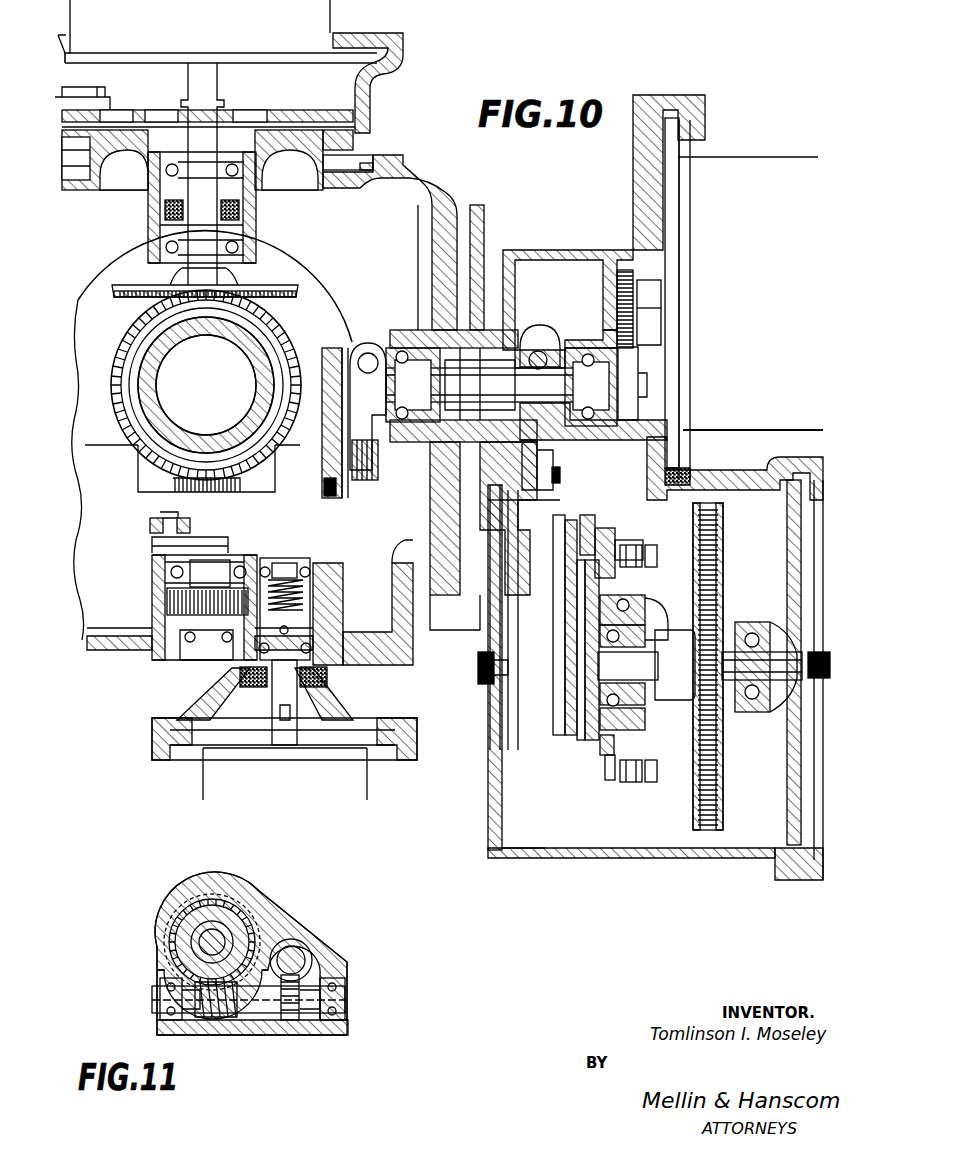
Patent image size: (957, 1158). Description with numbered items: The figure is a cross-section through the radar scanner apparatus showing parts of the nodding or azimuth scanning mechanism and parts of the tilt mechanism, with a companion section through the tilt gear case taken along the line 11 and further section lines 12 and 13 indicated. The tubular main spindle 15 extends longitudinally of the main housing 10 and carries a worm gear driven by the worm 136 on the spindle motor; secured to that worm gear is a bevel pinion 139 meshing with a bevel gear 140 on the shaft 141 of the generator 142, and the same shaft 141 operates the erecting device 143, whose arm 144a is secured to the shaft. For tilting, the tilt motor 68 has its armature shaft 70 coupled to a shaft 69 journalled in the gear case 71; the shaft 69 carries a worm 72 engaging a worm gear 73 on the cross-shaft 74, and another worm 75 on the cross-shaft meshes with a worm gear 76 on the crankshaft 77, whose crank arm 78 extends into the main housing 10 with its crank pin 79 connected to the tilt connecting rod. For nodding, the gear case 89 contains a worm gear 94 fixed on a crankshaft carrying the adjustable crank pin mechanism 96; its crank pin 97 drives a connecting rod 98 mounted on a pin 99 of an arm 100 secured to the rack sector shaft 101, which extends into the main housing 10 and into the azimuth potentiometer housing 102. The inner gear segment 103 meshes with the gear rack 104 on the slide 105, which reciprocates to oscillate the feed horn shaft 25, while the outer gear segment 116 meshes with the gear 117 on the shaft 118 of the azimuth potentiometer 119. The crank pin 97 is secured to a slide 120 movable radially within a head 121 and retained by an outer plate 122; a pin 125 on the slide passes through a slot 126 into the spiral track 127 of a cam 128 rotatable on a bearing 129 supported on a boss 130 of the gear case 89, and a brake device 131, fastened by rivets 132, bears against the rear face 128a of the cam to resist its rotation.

In FIG. 10, the main housing 10 is at (408, 187).
In FIG. 10, the section line 11— 11 is at (133, 604).
In FIG. 10, the section line 12— 12 is at (705, 426).
In FIG. 10, the section line 13— 13 is at (545, 201).
In FIG. 10, the tubular main spindle 15 is at (152, 388).
In FIG. 10, the oscillating feed horn shaft 25 is at (630, 670).
In FIG. 10, the tilt motor 68 is at (206, 776).
In FIG. 10, the shaft 69 is at (292, 702).
In FIG. 11, the shaft 69 is at (292, 954).
In FIG. 10, the tilt motor armature shaft 70 is at (297, 727).
In FIG. 10, the gear case 71 is at (343, 583).
In FIG. 11, the gear case 71 is at (182, 905).
In FIG. 10, the worm 72 is at (300, 573).
In FIG. 11, the worm 72 is at (306, 958).
In FIG. 11, the worm gear 73 is at (290, 1021).
In FIG. 11, the cross-shaft 74 is at (262, 1013).
In FIG. 11, the worm 75 is at (215, 1017).
In FIG. 10, the worm gear 76 is at (167, 598).
In FIG. 11, the worm gear 76 is at (238, 918).
In FIG. 10, the crankshaft 77 is at (215, 567).
In FIG. 11, the crankshaft 77 is at (216, 935).
In FIG. 10, the crank arm 78 is at (195, 537).
In FIG. 10, the crank pin 79 is at (180, 514).
In FIG. 10, the gear case 89 is at (732, 480).
In FIG. 10, the worm gear 94 is at (723, 797).
In FIG. 10, the adjustable crank pin mechanism 96 is at (565, 756).
In FIG. 10, the crank pin 97 is at (535, 722).
In FIG. 10, the connecting rod 98 is at (541, 604).
In FIG. 10, the pin 99 is at (562, 478).
In FIG. 10, the arm 100 is at (538, 444).
In FIG. 10, the rack sector shaft 101 is at (501, 375).
In FIG. 10, the azimuth potentiometer housing 102 is at (638, 216).
In FIG. 10, the gear segment 103 is at (370, 460).
In FIG. 10, the gear rack 104 is at (375, 494).
In FIG. 10, the slide 105 is at (330, 478).
In FIG. 10, the gear segment 116 is at (630, 355).
In FIG. 10, the gear 117 is at (617, 297).
In FIG. 10, the shaft 118 is at (652, 282).
In FIG. 10, the azimuth potentiometer 119 is at (745, 160).
In FIG. 10, the slide 120 is at (578, 750).
In FIG. 10, the head 121 is at (593, 751).
In FIG. 10, the outer plate 122 is at (560, 625).
In FIG. 10, the pin 125 is at (604, 540).
In FIG. 10, the slot 126 is at (588, 532).
In FIG. 10, the spiral track 127 is at (584, 789).
In FIG. 10, the cam 128 is at (605, 812).
In FIG. 10, the rear face of the cam 128a is at (651, 536).
In FIG. 10, the bearing 129 is at (648, 604).
In FIG. 10, the boss 130 is at (650, 625).
In FIG. 10, the brake device 131 is at (622, 818).
In FIG. 10, the rivets 132 is at (668, 542).
In FIG. 10, the worm 136 is at (244, 480).
In FIG. 10, the bevel pinion 139 is at (280, 332).
In FIG. 10, the bevel gear 140 is at (292, 296).
In FIG. 10, the shaft 141 is at (188, 194).
In FIG. 10, the generator 142 is at (331, 27).
In FIG. 10, the erecting device 143 is at (372, 104).
In FIG. 10, the arm 144a is at (268, 111).